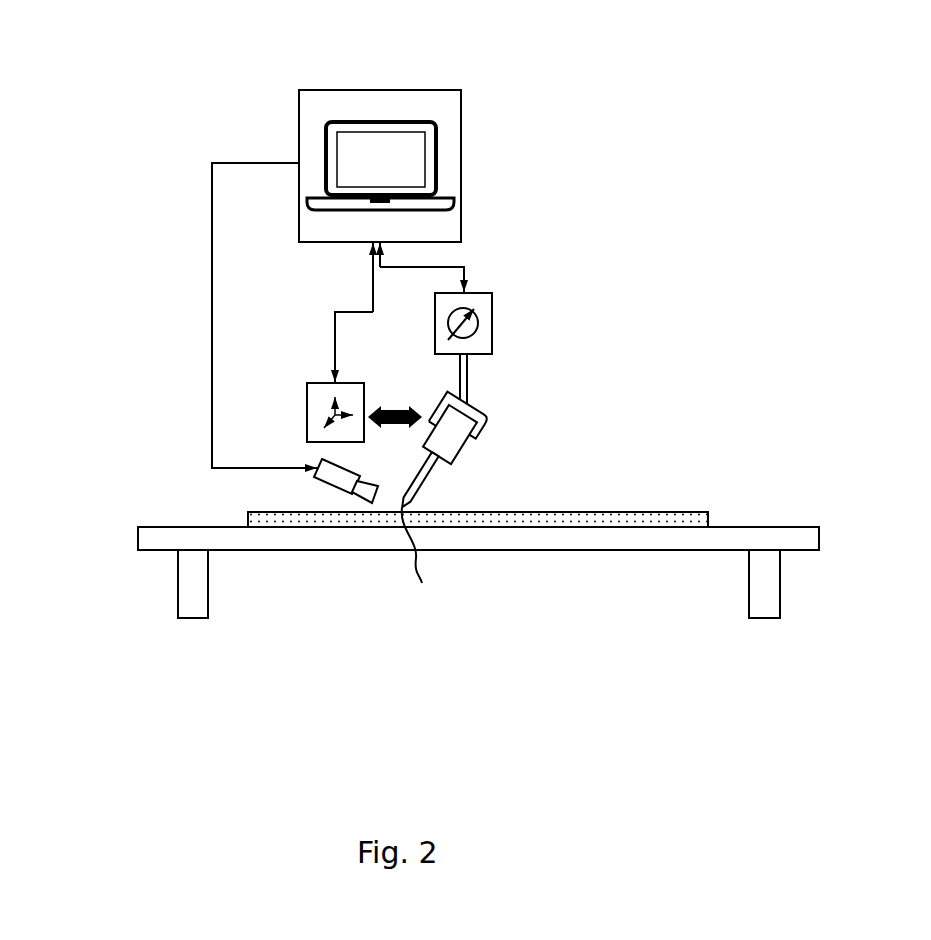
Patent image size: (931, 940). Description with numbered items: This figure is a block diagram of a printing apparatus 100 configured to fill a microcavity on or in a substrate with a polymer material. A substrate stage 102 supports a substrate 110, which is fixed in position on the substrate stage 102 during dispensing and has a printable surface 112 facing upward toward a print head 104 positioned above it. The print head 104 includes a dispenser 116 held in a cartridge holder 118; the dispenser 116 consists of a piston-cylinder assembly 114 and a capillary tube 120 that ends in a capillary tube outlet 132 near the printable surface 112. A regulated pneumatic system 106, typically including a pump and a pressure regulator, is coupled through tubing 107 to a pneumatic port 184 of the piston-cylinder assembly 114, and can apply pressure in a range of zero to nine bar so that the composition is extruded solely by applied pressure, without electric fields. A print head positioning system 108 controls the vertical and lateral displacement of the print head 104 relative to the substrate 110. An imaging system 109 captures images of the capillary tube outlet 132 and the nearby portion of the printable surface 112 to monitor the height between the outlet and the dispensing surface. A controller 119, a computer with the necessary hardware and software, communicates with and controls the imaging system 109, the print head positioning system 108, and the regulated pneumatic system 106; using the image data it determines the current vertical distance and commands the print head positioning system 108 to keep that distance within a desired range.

The printing apparatus 100 is at (270, 78).
The substrate stage 102 is at (137, 539).
The print head 104 is at (614, 420).
The regulated pneumatic system 106 is at (494, 322).
The tubing 107 is at (474, 366).
The print head positioning system 108 is at (304, 404).
The imaging system 109 is at (308, 476).
The substrate 110 is at (712, 519).
The printable surface 112 is at (630, 511).
The piston-cylinder assembly 114 is at (475, 437).
The dispenser 116 is at (560, 428).
The cartridge holder 118 is at (493, 418).
The controller 119 is at (463, 152).
The capillary tube 120 is at (434, 473).
The capillary tube outlet 132 is at (426, 560).
The pneumatic port 184 is at (471, 412).